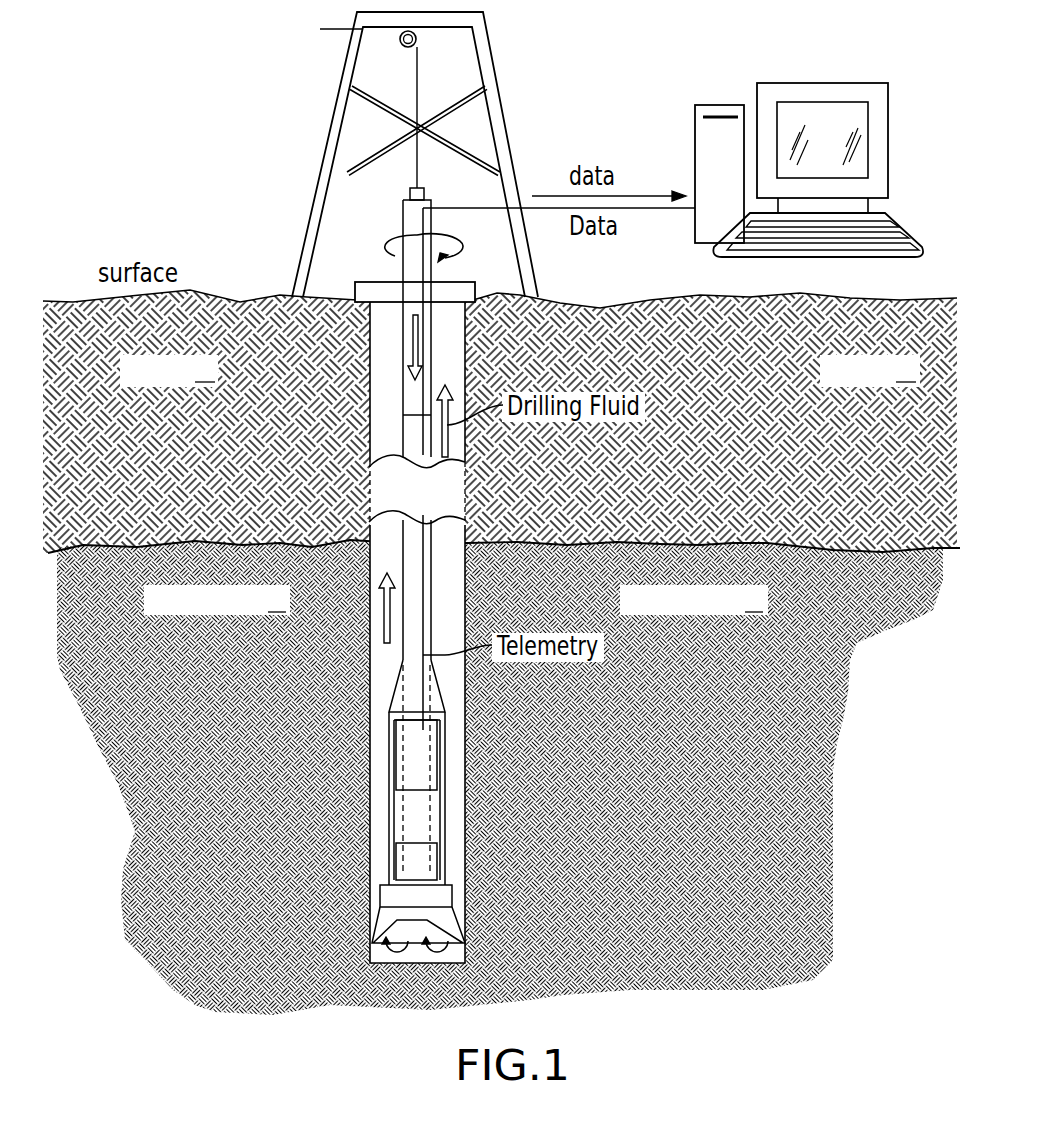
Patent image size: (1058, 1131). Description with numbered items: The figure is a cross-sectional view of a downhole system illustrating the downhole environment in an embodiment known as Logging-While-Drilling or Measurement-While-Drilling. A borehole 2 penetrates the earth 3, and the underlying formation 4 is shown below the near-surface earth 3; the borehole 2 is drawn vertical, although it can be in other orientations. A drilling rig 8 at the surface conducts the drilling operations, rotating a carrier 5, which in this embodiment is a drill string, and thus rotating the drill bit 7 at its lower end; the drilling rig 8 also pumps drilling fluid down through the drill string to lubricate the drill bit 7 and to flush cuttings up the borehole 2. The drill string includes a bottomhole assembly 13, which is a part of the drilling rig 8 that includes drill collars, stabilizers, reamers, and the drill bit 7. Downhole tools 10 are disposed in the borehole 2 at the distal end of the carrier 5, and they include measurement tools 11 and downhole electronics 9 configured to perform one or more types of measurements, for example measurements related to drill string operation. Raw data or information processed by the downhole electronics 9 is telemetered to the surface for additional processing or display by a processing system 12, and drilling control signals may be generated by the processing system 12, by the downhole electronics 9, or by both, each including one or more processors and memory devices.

The borehole 2 is at (375, 432).
The earth 3 is at (400, 490).
The formation 4 is at (504, 777).
The carrier 5 is at (405, 540).
The drill bit 7 is at (388, 920).
The drilling rig 8 is at (270, 245).
The downhole electronics 9 is at (440, 772).
The downhole tools 10 is at (380, 771).
The measurement tools 11 is at (438, 855).
The processing system 12 is at (712, 110).
The bottomhole assembly 13 is at (452, 895).